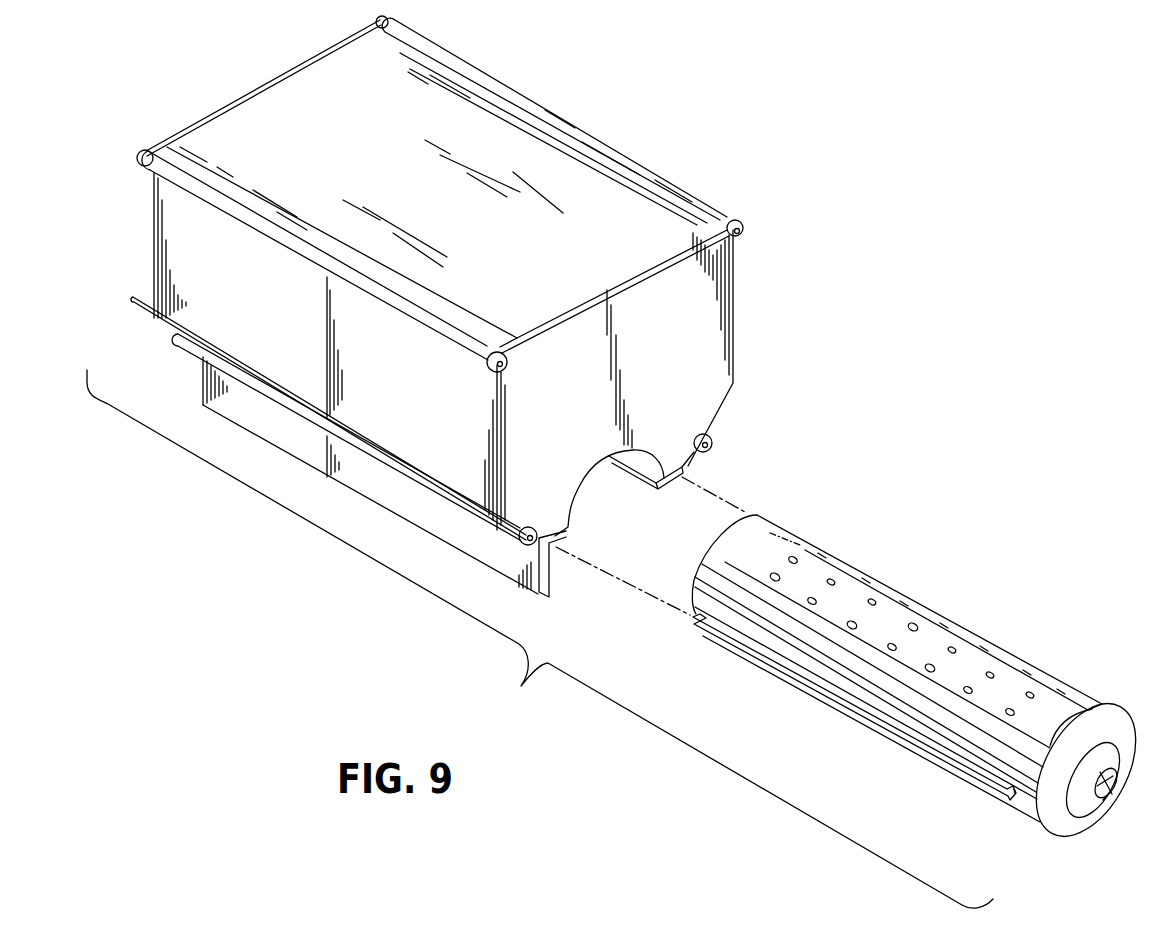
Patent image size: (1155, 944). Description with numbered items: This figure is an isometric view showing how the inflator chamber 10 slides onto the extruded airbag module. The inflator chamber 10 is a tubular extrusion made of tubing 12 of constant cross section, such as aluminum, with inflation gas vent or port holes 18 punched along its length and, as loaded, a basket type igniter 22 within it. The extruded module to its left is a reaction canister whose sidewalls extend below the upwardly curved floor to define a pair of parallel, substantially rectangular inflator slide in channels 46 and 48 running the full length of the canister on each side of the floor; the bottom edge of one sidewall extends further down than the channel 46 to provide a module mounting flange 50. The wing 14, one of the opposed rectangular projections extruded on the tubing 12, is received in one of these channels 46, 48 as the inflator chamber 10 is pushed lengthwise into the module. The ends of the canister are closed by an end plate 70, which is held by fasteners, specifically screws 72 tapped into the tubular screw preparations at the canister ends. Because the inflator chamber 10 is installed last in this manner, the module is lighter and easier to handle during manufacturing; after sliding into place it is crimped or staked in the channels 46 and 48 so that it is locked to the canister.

The inflator chamber 10 is at (923, 693).
The tubing 12 is at (1073, 707).
The wing 14 is at (902, 728).
The port holes 18 is at (852, 625).
The basket type igniter 22 is at (1077, 800).
The inflator slide in channel 46 is at (550, 547).
The inflator slide in channel 48 is at (663, 487).
The module mounting flange 50 is at (487, 537).
The end plate 70 is at (730, 355).
The screws 72 is at (743, 230).